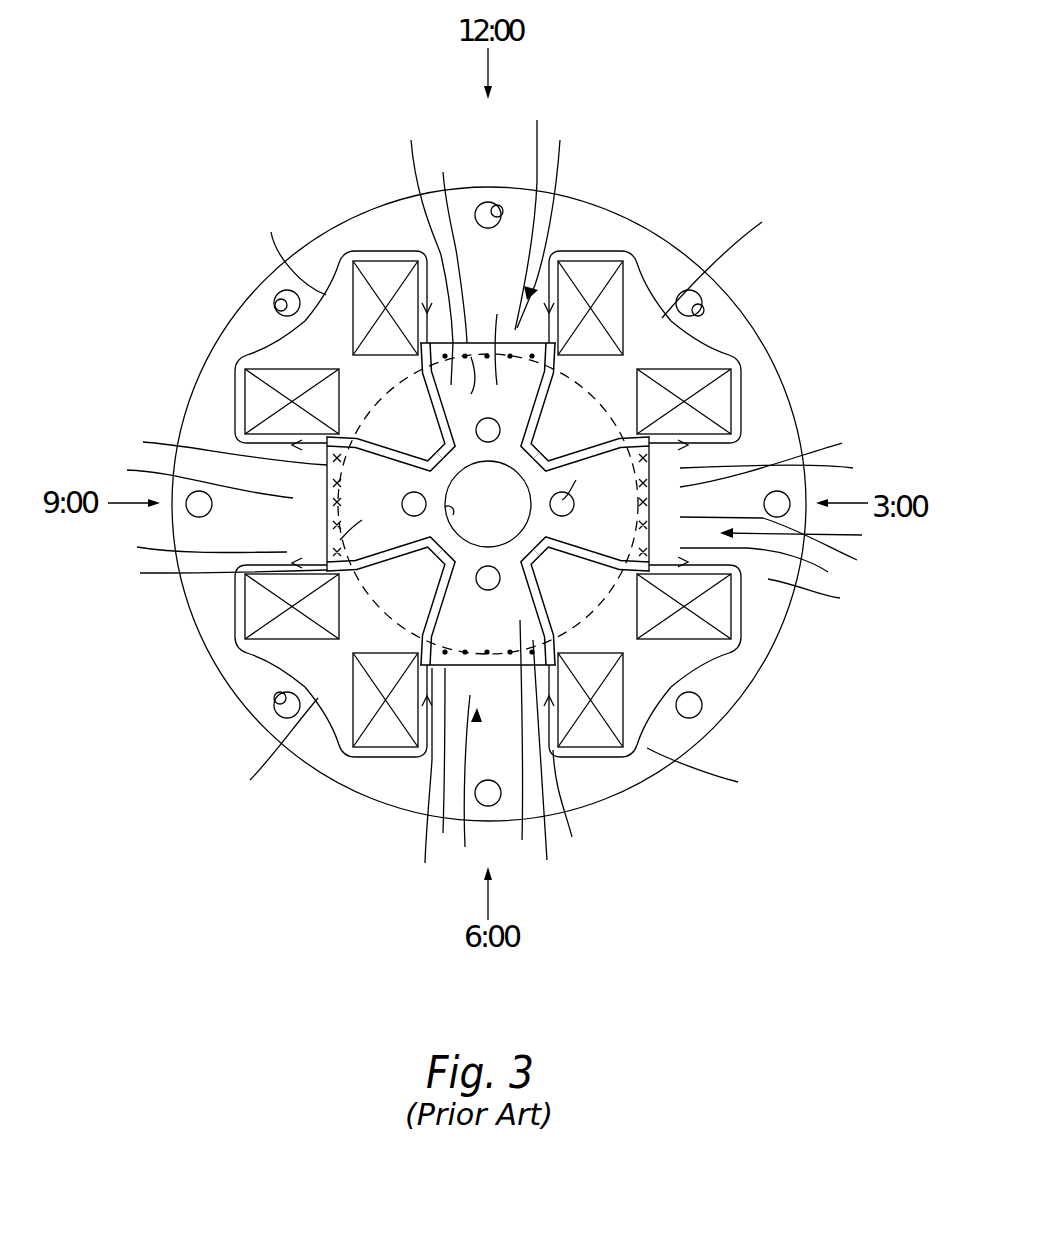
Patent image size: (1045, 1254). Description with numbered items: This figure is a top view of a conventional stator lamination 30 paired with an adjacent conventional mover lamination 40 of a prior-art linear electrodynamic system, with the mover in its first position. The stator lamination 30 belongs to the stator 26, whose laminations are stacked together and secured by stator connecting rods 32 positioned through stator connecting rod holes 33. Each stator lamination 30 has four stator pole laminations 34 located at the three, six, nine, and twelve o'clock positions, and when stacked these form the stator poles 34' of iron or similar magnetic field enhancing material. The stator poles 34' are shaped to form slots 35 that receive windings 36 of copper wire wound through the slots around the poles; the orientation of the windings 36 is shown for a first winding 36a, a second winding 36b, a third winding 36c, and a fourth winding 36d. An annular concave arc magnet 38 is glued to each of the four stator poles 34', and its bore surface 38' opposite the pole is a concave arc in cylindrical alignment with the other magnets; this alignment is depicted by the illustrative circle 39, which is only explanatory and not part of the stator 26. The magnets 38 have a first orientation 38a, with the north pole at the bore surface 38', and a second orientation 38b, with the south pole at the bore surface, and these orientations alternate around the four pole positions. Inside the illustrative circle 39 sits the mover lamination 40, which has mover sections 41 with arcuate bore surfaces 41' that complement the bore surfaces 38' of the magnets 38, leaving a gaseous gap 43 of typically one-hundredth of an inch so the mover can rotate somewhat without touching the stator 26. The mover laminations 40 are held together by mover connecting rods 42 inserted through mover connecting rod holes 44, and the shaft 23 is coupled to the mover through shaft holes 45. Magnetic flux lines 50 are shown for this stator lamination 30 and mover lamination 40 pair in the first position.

The shaft 23 is at (476, 515).
The stator 26 is at (817, 595).
The stator lamination 30 is at (678, 252).
The stator connecting rod 32 is at (482, 458).
The stator connecting rod hole 33 is at (499, 209).
The stator pole lamination 34 is at (491, 478).
The stator pole 34' is at (499, 494).
The slot 35 is at (505, 501).
The winding 36 is at (490, 505).
The first winding 36a is at (382, 268).
The second winding 36b is at (376, 740).
The third winding 36c is at (723, 402).
The fourth winding 36d is at (250, 400).
The annular concave arc magnet 38 is at (495, 519).
The bore surface 38' is at (489, 504).
The first orientation 38a is at (438, 519).
The second orientation 38b is at (836, 418).
The illustrative circle 39 is at (170, 305).
The mover lamination 40 is at (567, 807).
The mover section 41 is at (479, 502).
The arcuate bore surface 41' is at (470, 448).
The mover connecting rod 42 is at (683, 649).
The gaseous gap 43 is at (360, 465).
The mover connecting rod hole 44 is at (498, 434).
The shaft hole 45 is at (453, 515).
The magnetic flux lines 50 is at (342, 256).